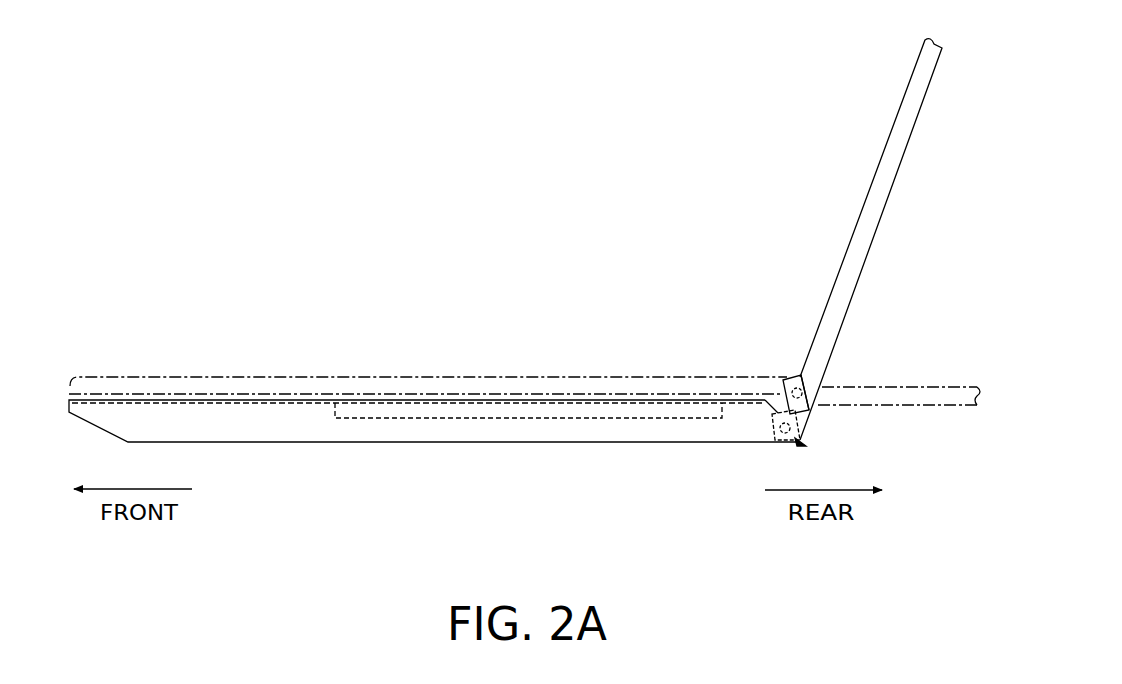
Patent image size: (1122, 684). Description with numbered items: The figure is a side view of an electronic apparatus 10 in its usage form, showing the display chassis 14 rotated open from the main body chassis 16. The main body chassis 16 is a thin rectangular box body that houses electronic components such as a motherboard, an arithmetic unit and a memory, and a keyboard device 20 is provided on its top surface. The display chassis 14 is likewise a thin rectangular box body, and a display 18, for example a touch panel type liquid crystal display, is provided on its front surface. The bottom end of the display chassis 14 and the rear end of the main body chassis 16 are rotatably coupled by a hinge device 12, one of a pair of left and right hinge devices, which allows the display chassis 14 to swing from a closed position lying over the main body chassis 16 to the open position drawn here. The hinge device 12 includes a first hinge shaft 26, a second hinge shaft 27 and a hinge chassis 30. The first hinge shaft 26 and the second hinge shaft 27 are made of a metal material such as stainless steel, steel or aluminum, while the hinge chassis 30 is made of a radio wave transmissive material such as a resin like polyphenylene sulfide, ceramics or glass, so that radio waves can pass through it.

The electronic apparatus 10 is at (315, 164).
The hinge device 12 is at (802, 443).
The display chassis 14 is at (525, 376).
The main body chassis 16 is at (433, 325).
The display 18 is at (843, 262).
The keyboard device 20 is at (518, 422).
The first hinge shaft 26 is at (776, 441).
The second hinge shaft 27 is at (786, 378).
The hinge chassis 30 is at (810, 408).